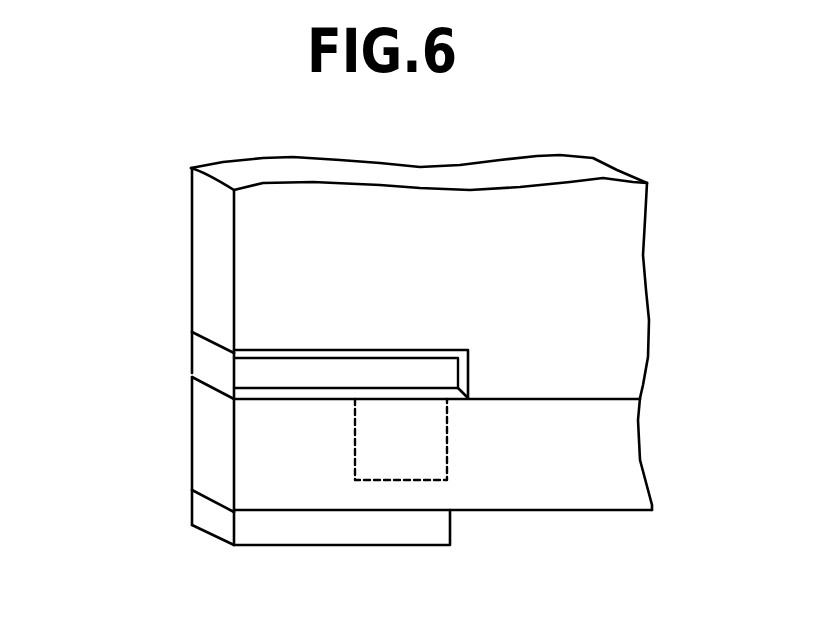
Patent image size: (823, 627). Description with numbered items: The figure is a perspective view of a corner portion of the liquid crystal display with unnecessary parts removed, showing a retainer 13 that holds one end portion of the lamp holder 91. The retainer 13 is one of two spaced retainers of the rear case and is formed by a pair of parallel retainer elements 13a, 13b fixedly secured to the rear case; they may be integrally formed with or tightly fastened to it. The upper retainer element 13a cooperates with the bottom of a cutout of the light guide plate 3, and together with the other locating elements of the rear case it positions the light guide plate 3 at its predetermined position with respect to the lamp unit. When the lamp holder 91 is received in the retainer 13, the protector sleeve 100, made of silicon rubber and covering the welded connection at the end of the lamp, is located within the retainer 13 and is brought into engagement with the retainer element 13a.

The light guide plate 3 is at (628, 253).
The retainer 13 is at (68, 333).
The retainer element 13a is at (200, 355).
The retainer element 13b is at (205, 512).
The lamp holder 91 is at (573, 500).
The protector sleeve 100 is at (410, 392).